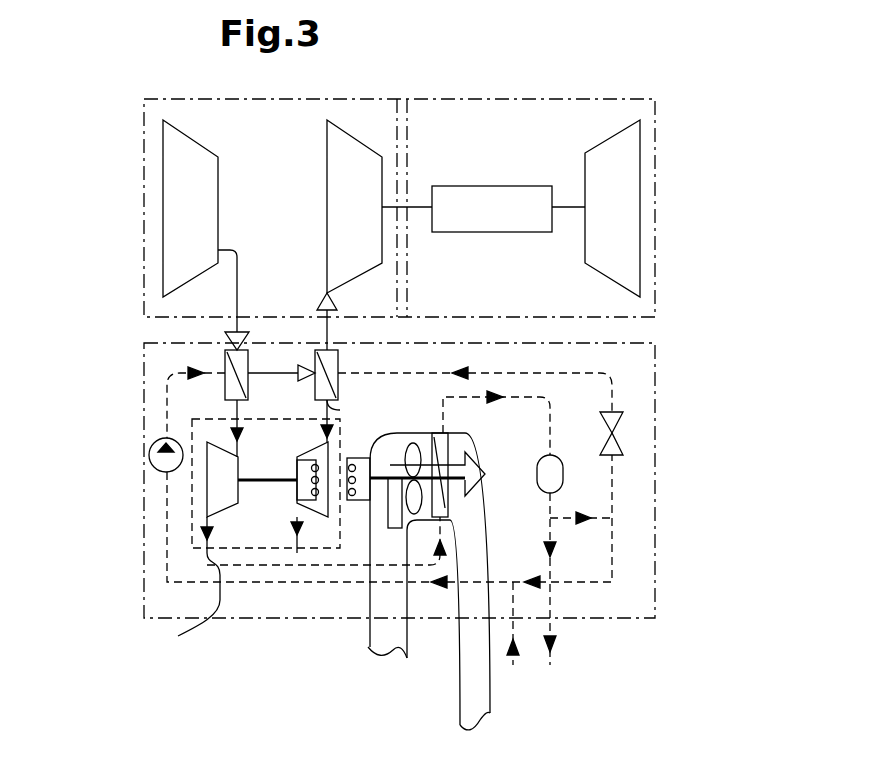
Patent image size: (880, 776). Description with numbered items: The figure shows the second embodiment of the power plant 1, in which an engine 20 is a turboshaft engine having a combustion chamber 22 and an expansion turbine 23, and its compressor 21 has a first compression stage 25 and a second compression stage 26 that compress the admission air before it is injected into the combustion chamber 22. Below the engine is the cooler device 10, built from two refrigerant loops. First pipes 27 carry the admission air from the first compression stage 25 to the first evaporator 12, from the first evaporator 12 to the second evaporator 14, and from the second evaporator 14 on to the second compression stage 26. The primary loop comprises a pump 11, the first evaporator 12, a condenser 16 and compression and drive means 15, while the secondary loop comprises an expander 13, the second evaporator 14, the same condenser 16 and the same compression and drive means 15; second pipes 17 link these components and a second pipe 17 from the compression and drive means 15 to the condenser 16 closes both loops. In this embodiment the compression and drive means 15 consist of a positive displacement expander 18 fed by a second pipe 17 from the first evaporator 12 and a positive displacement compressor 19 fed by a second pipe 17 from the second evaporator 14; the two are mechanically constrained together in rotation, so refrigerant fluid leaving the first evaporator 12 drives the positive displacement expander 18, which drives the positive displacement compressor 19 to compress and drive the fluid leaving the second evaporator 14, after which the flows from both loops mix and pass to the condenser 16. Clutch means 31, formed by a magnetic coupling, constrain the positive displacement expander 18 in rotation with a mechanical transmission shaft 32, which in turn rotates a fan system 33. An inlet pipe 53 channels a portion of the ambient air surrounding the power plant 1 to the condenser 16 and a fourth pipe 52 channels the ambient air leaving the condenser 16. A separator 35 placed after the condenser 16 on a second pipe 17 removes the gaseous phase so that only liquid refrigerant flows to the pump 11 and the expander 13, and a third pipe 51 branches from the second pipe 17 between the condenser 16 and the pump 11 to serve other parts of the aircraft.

The power plant 1 is at (662, 660).
The cooler device 10 is at (657, 515).
The pump 11 is at (152, 464).
The first evaporator 12 is at (225, 363).
The expander 13 is at (623, 440).
The second evaporator 14 is at (316, 396).
The compression and drive means 15 is at (193, 532).
The condenser 16 is at (440, 503).
The second pipes 17 is at (340, 410).
The positive displacement expander 18 is at (213, 488).
The positive displacement compressor 19 is at (297, 553).
The engine 20 is at (575, 100).
The compressor 21 is at (144, 165).
The combustion chamber 22 is at (475, 222).
The expansion turbine 23 is at (597, 222).
The first compression stage 25 is at (175, 193).
The second compression stage 26 is at (335, 193).
The first pipes 27 is at (273, 373).
The clutch means 31 is at (358, 458).
The mechanical transmission shaft 32 is at (393, 470).
The fan system 33 is at (410, 443).
The separator 35 is at (563, 477).
The third pipe 51 is at (515, 596).
The fourth pipe 52 is at (482, 695).
The inlet pipe 53 is at (392, 640).